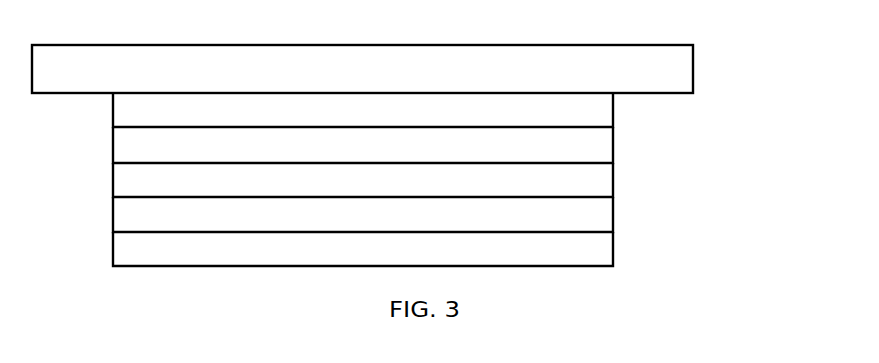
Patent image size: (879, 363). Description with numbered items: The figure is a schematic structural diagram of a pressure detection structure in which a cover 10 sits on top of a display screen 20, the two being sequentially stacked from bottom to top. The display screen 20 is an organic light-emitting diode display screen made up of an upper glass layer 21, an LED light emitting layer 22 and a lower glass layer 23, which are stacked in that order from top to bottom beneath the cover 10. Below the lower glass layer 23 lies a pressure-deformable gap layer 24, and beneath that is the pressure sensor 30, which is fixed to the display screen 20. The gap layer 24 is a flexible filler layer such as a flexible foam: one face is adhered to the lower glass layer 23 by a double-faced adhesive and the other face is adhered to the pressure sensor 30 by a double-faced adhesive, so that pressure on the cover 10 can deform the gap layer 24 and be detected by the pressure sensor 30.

The cover 10 is at (673, 70).
The display screen 20 is at (442, 145).
The upper glass layer 21 is at (597, 110).
The LED light emitting layer 22 is at (597, 147).
The lower glass layer 23 is at (597, 179).
The gap layer 24 is at (597, 217).
The pressure sensor 30 is at (603, 253).